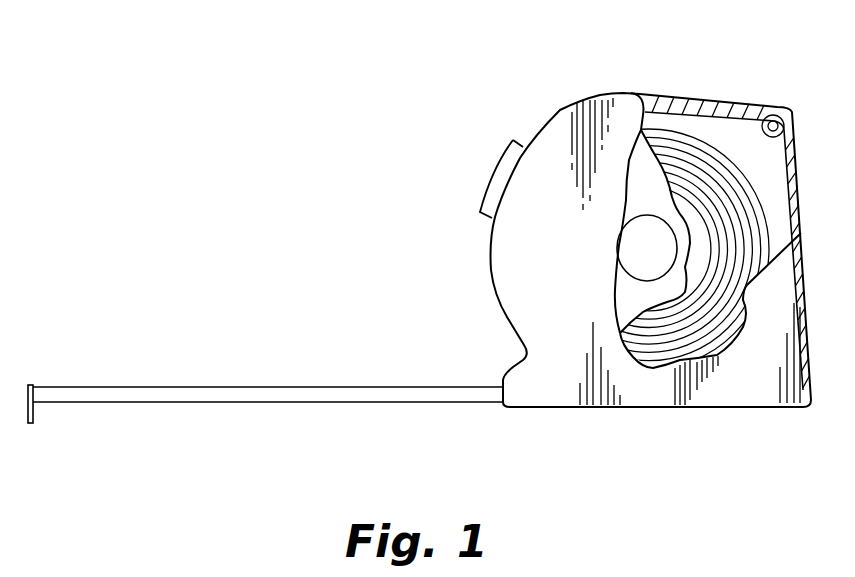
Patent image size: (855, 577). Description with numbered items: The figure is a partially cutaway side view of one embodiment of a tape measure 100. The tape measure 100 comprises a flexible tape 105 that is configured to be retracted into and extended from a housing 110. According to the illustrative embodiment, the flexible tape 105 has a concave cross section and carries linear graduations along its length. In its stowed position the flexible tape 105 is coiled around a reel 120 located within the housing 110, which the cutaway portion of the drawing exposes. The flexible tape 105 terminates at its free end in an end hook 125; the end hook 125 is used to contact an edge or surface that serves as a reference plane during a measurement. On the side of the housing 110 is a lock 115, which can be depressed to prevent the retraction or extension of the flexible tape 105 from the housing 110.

The tape measure 100 is at (318, 95).
The flexible tape 105 is at (288, 397).
The housing 110 is at (700, 96).
The lock 115 is at (497, 175).
The reel 120 is at (645, 253).
The end hook 125 is at (35, 410).